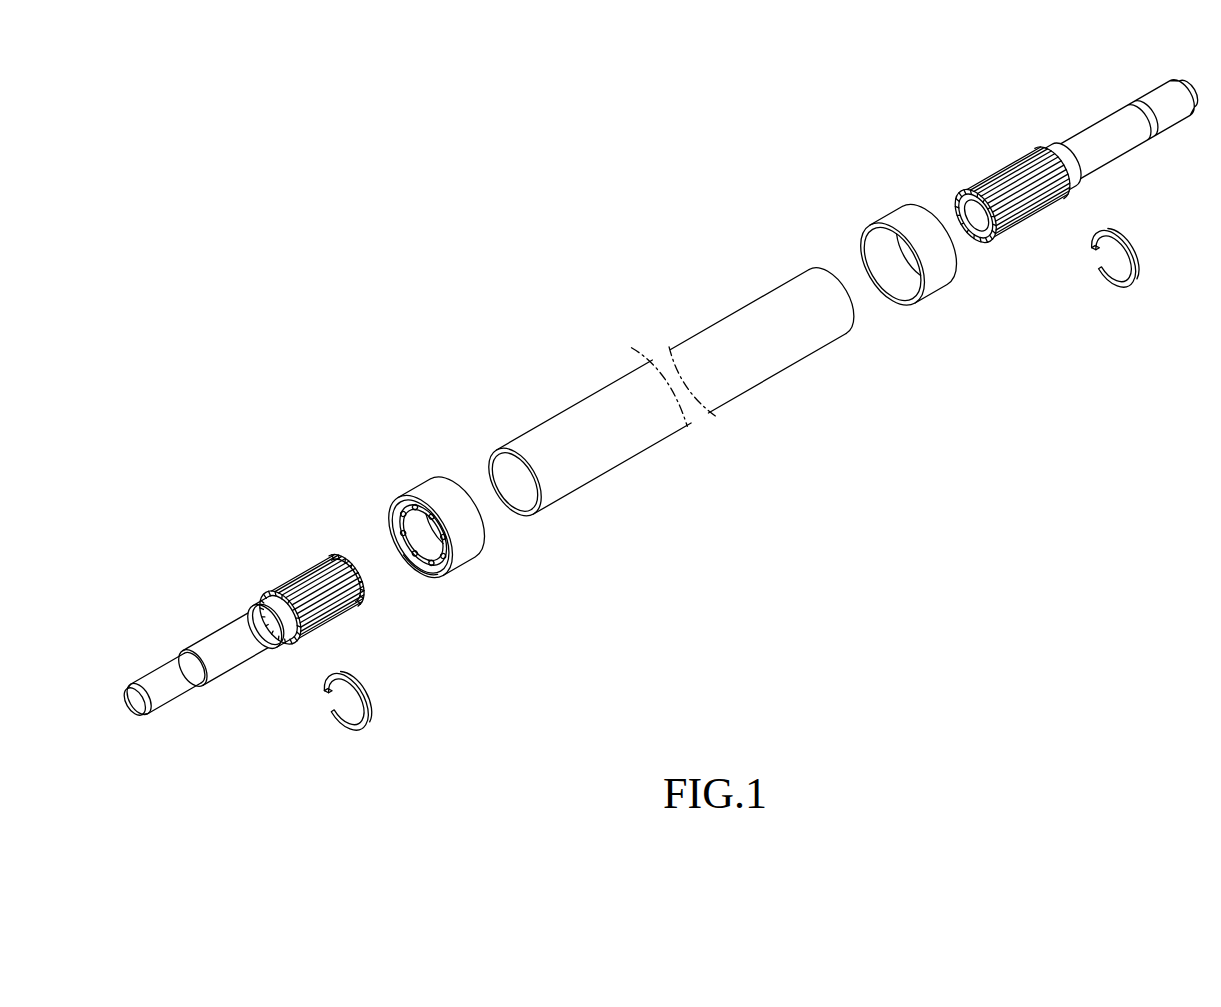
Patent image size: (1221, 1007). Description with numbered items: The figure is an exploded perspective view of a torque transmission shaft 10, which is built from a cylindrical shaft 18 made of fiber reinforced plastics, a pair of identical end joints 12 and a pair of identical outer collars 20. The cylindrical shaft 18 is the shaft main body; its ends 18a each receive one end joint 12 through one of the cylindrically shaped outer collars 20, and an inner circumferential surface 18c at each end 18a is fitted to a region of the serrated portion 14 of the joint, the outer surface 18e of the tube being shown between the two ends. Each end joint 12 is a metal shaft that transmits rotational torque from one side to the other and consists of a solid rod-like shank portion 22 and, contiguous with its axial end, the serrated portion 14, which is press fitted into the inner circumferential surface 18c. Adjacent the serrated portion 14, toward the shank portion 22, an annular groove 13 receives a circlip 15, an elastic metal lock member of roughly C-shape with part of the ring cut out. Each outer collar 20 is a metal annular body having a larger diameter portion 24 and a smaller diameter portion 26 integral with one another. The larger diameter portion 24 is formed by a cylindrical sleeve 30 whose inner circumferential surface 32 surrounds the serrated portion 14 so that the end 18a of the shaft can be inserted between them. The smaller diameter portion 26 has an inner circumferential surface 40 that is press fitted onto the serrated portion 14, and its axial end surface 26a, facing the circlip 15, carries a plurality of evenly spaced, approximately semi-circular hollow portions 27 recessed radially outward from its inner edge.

The torque transmission shaft 10 is at (624, 297).
The end joint 12 is at (208, 633).
The annular groove 13 is at (272, 590).
The serrated portion 14 is at (298, 576).
The circlip 15 is at (371, 718).
The cylindrical shaft 18 is at (697, 333).
The end 18a is at (520, 443).
The inner circumferential surface 18c is at (523, 500).
The outer peripheral surface of tube 18e is at (590, 410).
The outer collar 20 is at (415, 488).
The shank portion 22 is at (218, 658).
The larger diameter portion 24 is at (430, 488).
The smaller diameter portion 26 is at (408, 507).
The end surface 26a is at (430, 573).
The hollow portions 27 is at (388, 527).
The sleeve 30 is at (463, 555).
The inner circumferential surface 32 is at (895, 288).
The inner circumferential surface 40 is at (410, 553).